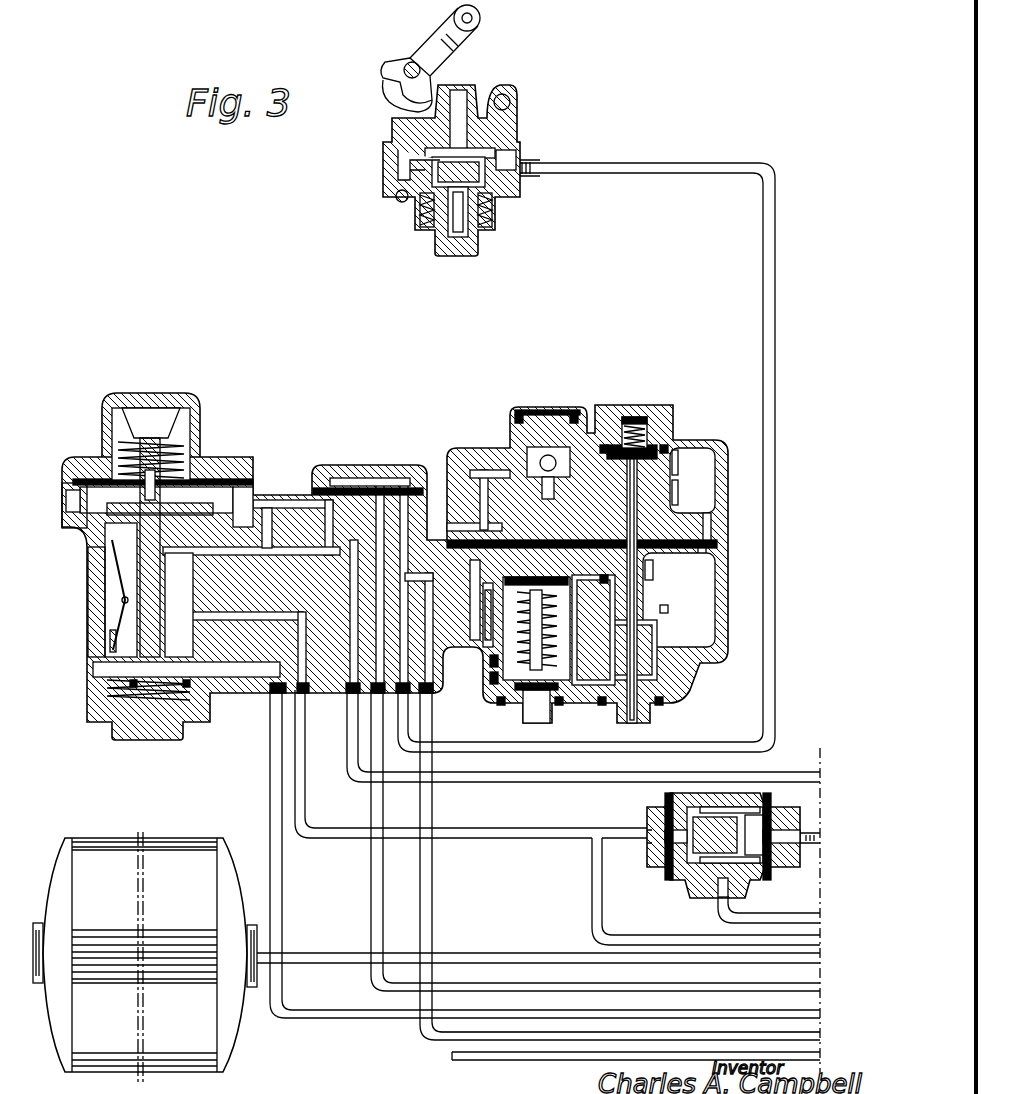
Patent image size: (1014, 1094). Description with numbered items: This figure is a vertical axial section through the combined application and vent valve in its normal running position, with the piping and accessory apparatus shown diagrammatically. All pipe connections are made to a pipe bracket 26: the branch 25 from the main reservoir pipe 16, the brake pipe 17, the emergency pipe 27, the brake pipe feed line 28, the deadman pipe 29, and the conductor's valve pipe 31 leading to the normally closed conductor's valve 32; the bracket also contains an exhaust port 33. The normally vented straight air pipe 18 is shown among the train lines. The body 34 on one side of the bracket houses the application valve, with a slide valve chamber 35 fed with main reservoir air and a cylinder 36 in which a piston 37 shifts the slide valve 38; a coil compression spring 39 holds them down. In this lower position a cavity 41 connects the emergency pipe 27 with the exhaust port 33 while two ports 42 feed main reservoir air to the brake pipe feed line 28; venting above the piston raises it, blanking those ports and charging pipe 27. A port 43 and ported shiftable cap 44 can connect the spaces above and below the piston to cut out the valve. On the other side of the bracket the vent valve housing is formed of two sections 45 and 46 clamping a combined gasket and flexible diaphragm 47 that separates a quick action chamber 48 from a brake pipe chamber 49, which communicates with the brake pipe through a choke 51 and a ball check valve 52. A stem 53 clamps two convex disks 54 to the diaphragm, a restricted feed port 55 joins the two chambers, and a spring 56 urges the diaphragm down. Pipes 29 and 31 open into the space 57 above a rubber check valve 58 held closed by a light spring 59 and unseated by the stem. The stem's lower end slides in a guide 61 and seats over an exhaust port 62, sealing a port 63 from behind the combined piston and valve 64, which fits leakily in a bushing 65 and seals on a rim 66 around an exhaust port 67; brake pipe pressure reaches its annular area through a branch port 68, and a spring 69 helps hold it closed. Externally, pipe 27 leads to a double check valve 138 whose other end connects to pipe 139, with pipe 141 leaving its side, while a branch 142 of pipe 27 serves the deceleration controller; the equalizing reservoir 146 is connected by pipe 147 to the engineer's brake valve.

The main reservoir pipe 16 is at (648, 1022).
The brake pipe 17 is at (424, 897).
The straight air pipe 18 is at (468, 1062).
The third branch 25 is at (272, 893).
The pipe bracket 26 is at (280, 508).
The emergency pipe 27 is at (296, 763).
The brake pipe feed line 28 is at (360, 776).
The deadman pipe 29 is at (372, 812).
The conductor's valve pipe 31 is at (771, 410).
The conductor's valve 32 is at (520, 150).
The exhaust port 33 is at (312, 690).
The body 34 is at (87, 640).
The slide valve chamber 35 is at (100, 672).
The cylinder 36 is at (75, 505).
The piston 37 is at (112, 506).
The slide valve 38 is at (92, 588).
The coil compression spring 39 is at (190, 433).
The cavity 41 is at (126, 637).
The ports 42 is at (127, 595).
The port 43 is at (240, 527).
The ported shiftable cap 44 is at (345, 470).
The housing section 45 is at (728, 585).
The housing section 46 is at (728, 470).
The combined gasket and flexible diaphragm 47 is at (717, 544).
The quick action chamber 48 is at (705, 620).
The brake pipe chamber 49 is at (689, 494).
The choke 51 is at (455, 527).
The ball check valve 52 is at (505, 450).
The stem 53 is at (714, 436).
The convex disks 54 is at (712, 518).
The restricted feed port 55 is at (665, 580).
The spring 56 is at (689, 465).
The space 57 is at (672, 446).
The rubber check valve 58 is at (630, 418).
The light spring 59 is at (640, 418).
The guide 61 is at (652, 640).
The exhaust port 62 is at (640, 725).
The port 63 is at (593, 623).
The combined piston and valve 64 is at (490, 663).
The bushing 65 is at (490, 678).
The rim 66 is at (539, 706).
The exhaust port 67 is at (525, 723).
The branch port 68 is at (470, 615).
The spring 69 is at (536, 628).
The double check valve 138 is at (647, 815).
The pipe 139 is at (806, 825).
The pipe 141 is at (784, 920).
The branch 142 is at (596, 893).
The equalizing reservoir 146 is at (183, 858).
The pipe 147 is at (518, 960).